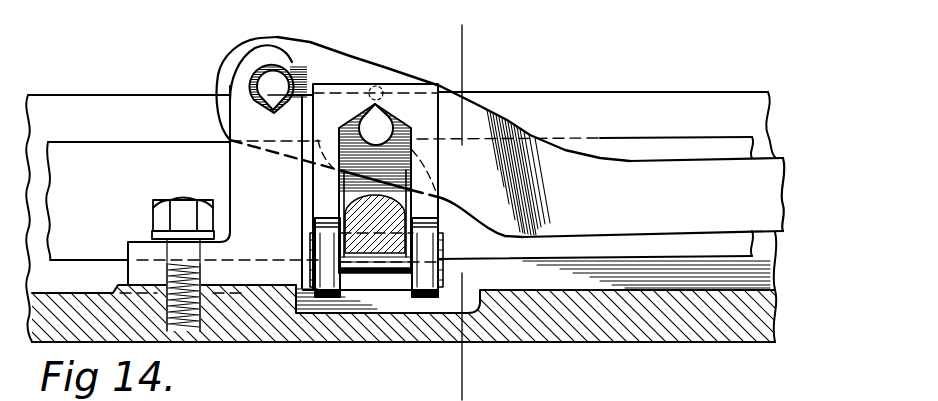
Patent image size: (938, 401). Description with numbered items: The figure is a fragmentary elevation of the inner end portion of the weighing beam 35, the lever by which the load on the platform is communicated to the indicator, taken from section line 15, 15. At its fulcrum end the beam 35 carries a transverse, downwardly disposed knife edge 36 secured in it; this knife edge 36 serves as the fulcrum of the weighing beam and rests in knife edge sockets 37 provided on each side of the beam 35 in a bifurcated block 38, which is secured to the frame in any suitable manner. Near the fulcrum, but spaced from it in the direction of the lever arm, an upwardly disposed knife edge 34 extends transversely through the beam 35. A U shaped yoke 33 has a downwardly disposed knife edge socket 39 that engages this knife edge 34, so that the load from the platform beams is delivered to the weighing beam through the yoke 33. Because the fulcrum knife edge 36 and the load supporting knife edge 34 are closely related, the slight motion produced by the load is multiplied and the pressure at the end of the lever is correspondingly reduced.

The knife edge engaging socket 15 is at (463, 353).
The yoke 33 is at (440, 121).
The knife edge 34 is at (452, 90).
The weighing beam 35 is at (513, 125).
The knife edge 36 is at (281, 78).
The knife edge socket 37 is at (272, 111).
The bifurcated block 38 is at (215, 187).
The knife edge socket 39 is at (378, 124).